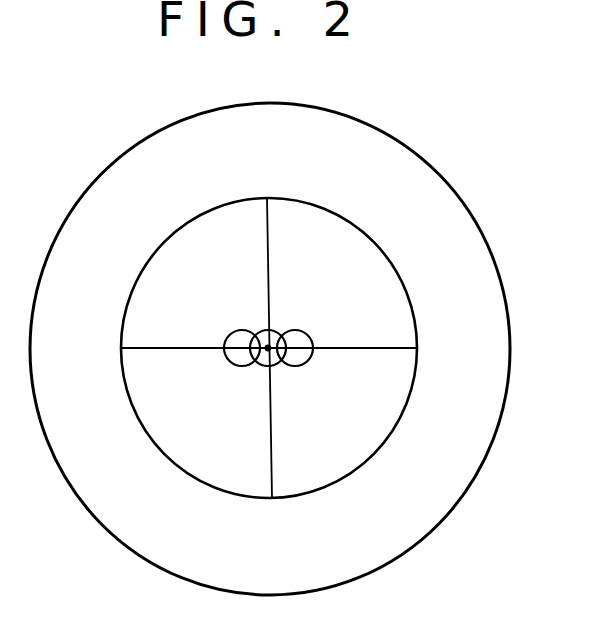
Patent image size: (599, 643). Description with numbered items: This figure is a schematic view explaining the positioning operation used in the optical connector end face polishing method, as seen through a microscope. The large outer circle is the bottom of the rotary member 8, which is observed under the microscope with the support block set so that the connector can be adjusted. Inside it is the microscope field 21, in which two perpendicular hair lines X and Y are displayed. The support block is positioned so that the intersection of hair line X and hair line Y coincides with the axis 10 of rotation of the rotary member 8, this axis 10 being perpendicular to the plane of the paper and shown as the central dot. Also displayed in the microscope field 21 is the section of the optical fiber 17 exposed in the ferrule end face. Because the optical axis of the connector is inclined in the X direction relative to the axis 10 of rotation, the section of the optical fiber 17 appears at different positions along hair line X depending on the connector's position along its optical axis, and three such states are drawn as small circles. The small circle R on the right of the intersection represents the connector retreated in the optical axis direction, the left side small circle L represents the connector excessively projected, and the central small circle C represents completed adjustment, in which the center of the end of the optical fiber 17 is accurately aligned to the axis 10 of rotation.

The rotary member 8 is at (498, 268).
The microscope field 21 is at (375, 240).
The axis of rotation 10 is at (266, 344).
The optical fiber 17 is at (228, 337).
The hair line X is at (367, 348).
The hair line Y is at (269, 241).
The left side small circle L is at (231, 362).
The central small circle C is at (262, 366).
The small circle R is at (306, 364).